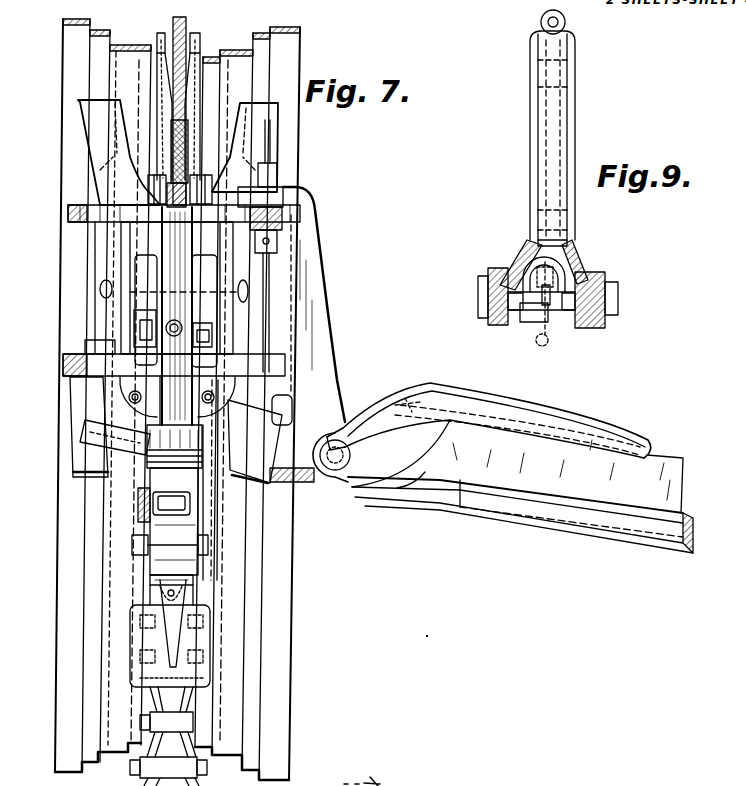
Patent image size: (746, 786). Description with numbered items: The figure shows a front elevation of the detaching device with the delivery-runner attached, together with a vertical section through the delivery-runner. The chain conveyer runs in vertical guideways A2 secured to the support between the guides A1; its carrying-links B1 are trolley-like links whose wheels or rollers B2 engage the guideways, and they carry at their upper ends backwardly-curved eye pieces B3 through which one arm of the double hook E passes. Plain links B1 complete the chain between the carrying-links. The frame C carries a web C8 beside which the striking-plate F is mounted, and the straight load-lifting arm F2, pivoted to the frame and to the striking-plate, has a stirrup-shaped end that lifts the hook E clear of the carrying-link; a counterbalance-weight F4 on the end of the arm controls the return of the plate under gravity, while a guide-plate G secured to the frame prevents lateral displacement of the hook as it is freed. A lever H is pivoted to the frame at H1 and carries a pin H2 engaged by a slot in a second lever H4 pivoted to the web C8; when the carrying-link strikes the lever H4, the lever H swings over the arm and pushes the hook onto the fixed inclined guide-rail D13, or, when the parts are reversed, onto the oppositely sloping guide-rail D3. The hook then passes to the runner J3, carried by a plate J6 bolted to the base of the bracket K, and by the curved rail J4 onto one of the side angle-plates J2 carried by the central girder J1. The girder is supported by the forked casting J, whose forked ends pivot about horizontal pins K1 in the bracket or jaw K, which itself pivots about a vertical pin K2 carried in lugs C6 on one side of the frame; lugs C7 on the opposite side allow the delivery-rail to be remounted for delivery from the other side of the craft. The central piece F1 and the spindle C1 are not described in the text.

In FIG. 7, the guides A1 is at (258, 678).
In FIG. 7, the vertical guideways A2 is at (123, 700).
In FIG. 7, the carrying-link B1 is at (203, 50).
In FIG. 7, the wheels or rollers B2 is at (197, 657).
In FIG. 7, the backwardly-curved loops or eye pieces B3 is at (190, 590).
In FIG. 7, the frame C is at (184, 227).
In FIG. 7, the screw spindle C1 is at (180, 60).
In FIG. 7, the lugs C6 is at (254, 218).
In FIG. 7, the lugs C7 is at (70, 211).
In FIG. 7, the web C8 is at (160, 210).
In FIG. 7, the second guide-rail D3 is at (86, 427).
In FIG. 7, the fixed guide-rail D13 is at (409, 420).
In FIG. 7, the double hook E is at (167, 637).
In FIG. 9, the double hook E is at (585, 265).
In FIG. 7, the striking-plate F is at (102, 283).
In FIG. 7, the slide block F1 is at (150, 506).
In FIG. 7, the straight load-lifting arm F2 is at (162, 543).
In FIG. 7, the counterbalance-weight F4 is at (143, 467).
In FIG. 7, the guide-plate G is at (220, 480).
In FIG. 7, the lever H is at (78, 350).
In FIG. 7, the pivot H1 is at (205, 335).
In FIG. 7, the pin H2 is at (160, 330).
In FIG. 7, the lever H4 is at (210, 337).
In FIG. 7, the forked casting J is at (387, 423).
In FIG. 9, the forked casting J is at (487, 275).
In FIG. 7, the central girder J1 is at (655, 505).
In FIG. 7, the side angle-plates J2 is at (606, 508).
In FIG. 7, the runner J3 is at (327, 483).
In FIG. 9, the runner J3 is at (545, 313).
In FIG. 7, the curved rail J4 is at (392, 478).
In FIG. 9, the plate J6 is at (543, 323).
In FIG. 7, the bracket or jaw K is at (320, 338).
In FIG. 9, the bracket or jaw K is at (576, 101).
In FIG. 7, the horizontal pins K1 is at (350, 480).
In FIG. 9, the horizontal pins K1 is at (618, 303).
In FIG. 7, the vertical pin K2 is at (258, 197).